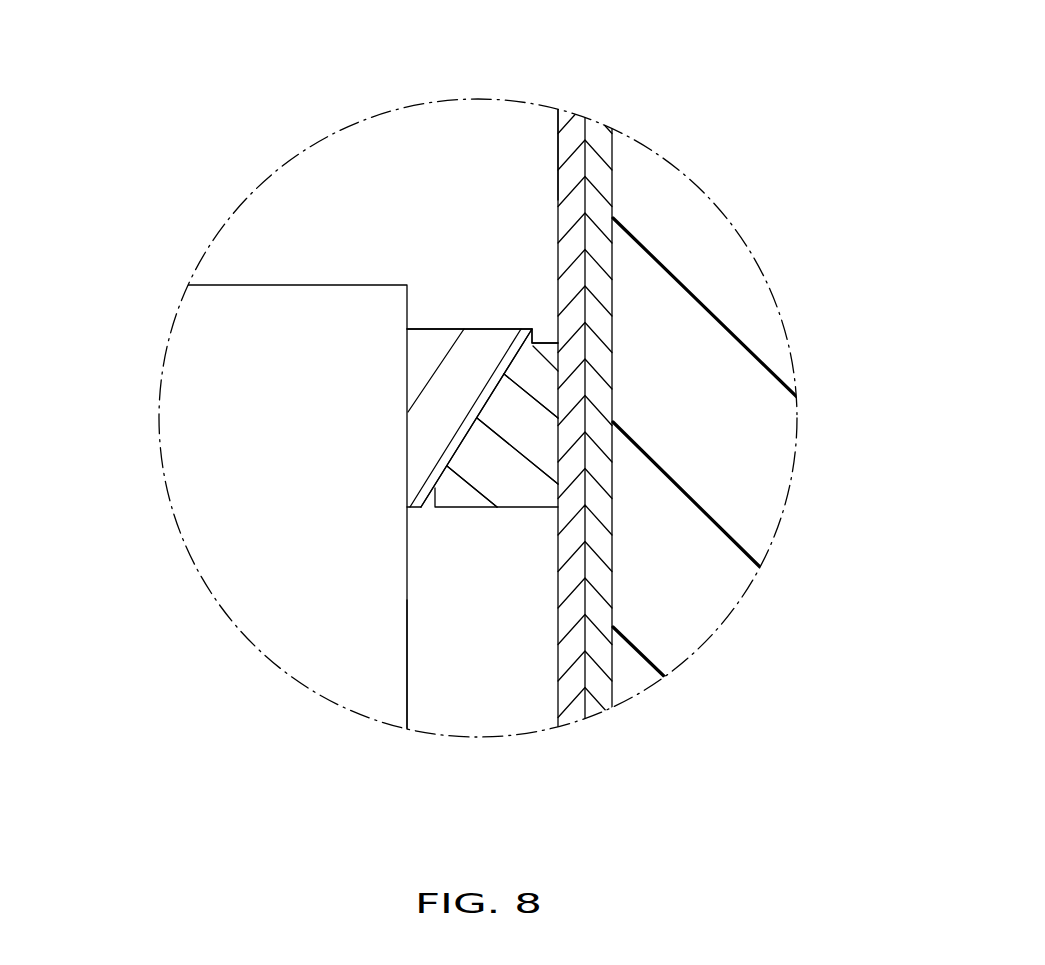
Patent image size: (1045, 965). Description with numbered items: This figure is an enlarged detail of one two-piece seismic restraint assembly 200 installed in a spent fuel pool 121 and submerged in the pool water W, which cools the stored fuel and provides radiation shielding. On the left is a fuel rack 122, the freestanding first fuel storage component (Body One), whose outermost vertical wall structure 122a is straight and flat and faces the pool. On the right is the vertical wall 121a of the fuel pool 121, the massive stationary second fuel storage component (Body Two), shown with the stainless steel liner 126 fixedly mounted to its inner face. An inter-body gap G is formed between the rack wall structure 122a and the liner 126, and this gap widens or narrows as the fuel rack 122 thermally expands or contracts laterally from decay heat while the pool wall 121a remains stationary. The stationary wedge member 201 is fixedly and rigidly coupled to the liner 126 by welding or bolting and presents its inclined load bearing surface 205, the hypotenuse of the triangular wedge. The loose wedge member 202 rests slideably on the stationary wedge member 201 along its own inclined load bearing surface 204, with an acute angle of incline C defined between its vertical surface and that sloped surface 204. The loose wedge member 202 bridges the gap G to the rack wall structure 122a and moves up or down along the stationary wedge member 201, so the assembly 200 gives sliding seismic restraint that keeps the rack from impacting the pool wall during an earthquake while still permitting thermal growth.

The spent fuel pool 121 is at (499, 144).
The vertical wall of fuel pool 121a is at (752, 470).
The fuel rack 122 is at (282, 368).
The vertical wall structure of fuel rack 122a is at (411, 686).
The stainless steel liner 126 is at (575, 432).
The seismic restraint assembly 200 is at (455, 291).
The stationary wedge member 201 is at (540, 443).
The loose wedge member 202 is at (507, 342).
The inclined load bearing surface 204 is at (467, 443).
The inclined load bearing surface 205 is at (452, 443).
The pool water W is at (322, 167).
The inter-body gap G is at (557, 633).
The acute angle of incline C is at (412, 353).